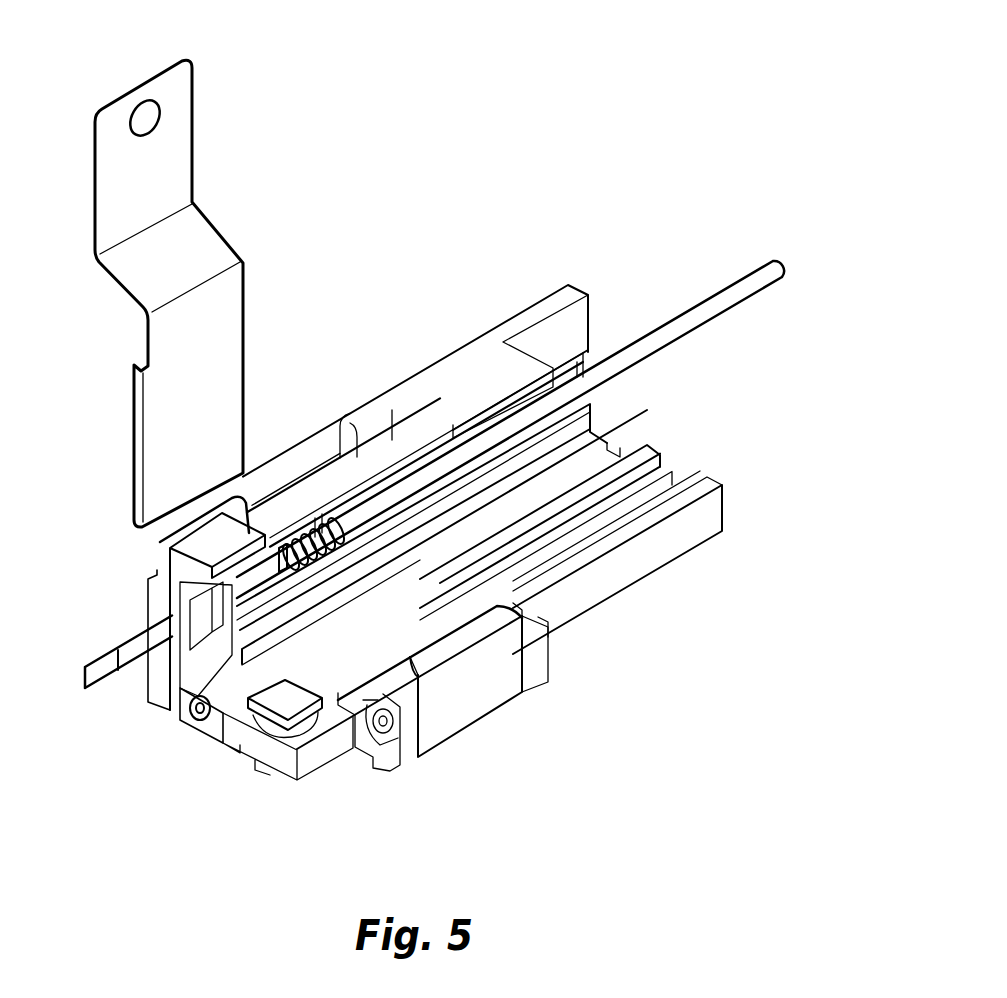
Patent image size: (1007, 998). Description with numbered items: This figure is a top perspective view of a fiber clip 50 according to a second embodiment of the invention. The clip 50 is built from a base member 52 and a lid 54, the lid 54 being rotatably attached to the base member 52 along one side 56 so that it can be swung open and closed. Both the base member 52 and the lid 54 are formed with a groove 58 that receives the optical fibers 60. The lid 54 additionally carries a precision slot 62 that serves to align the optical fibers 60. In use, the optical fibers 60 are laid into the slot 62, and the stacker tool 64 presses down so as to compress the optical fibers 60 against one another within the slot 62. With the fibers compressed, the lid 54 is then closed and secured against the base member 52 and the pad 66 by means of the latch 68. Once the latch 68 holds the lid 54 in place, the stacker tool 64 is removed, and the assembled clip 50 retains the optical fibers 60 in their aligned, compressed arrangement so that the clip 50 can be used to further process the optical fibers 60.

The clip 50 is at (583, 139).
The base member 52 is at (722, 512).
The lid 54 is at (518, 313).
The side 56 is at (202, 720).
The groove 58 is at (583, 362).
The optical fibers 60 is at (767, 290).
The precision slot 62 is at (170, 610).
The stacker tool 64 is at (192, 132).
The pad 66 is at (278, 698).
The latch 68 is at (460, 707).